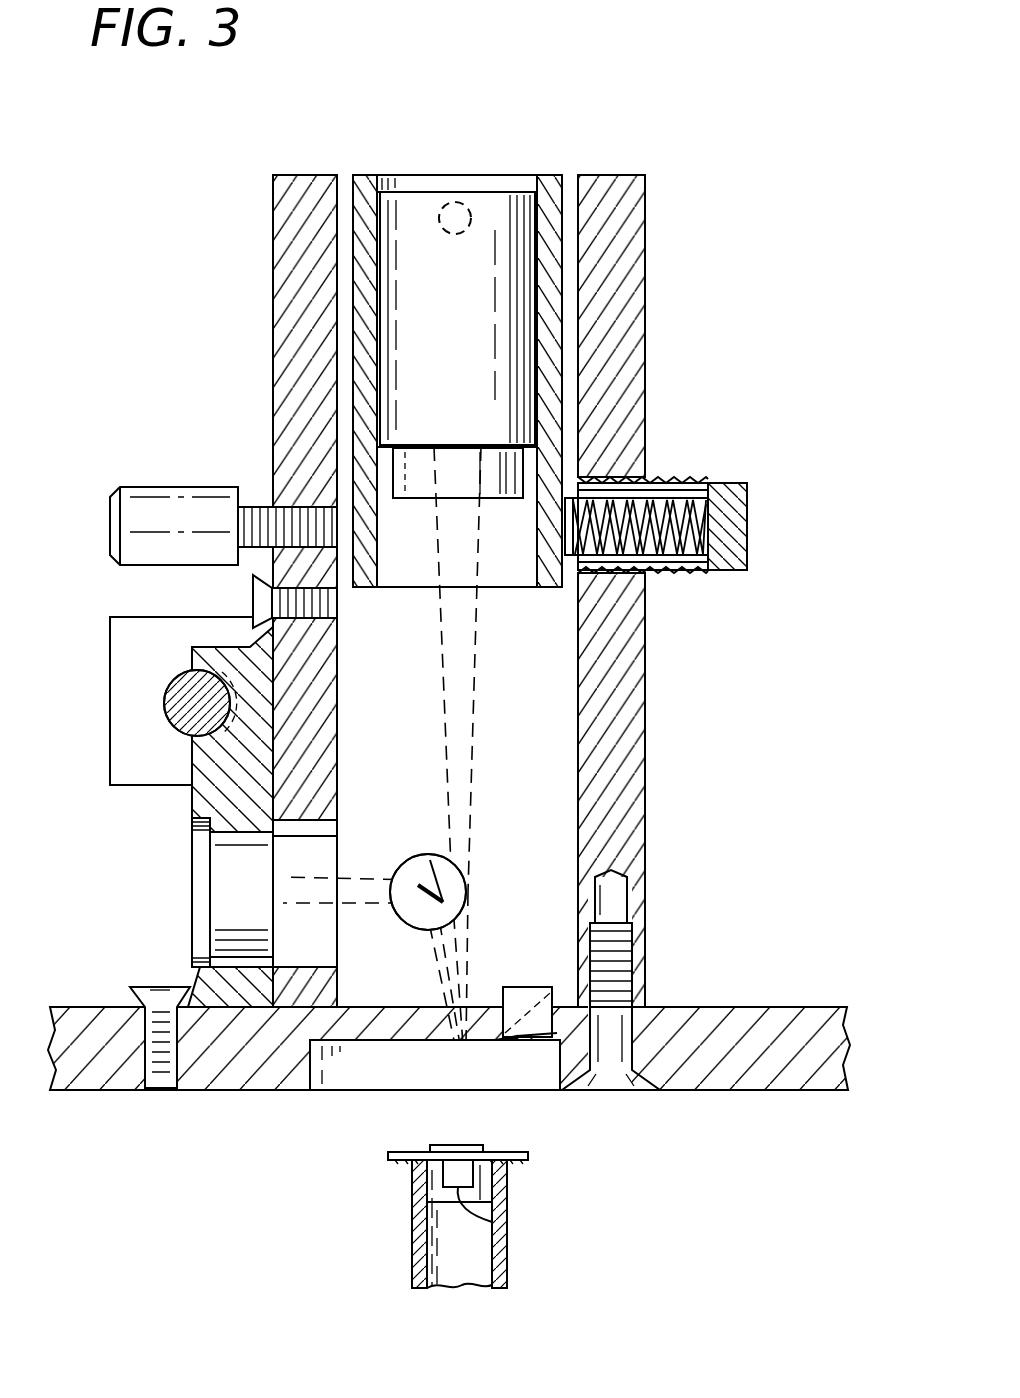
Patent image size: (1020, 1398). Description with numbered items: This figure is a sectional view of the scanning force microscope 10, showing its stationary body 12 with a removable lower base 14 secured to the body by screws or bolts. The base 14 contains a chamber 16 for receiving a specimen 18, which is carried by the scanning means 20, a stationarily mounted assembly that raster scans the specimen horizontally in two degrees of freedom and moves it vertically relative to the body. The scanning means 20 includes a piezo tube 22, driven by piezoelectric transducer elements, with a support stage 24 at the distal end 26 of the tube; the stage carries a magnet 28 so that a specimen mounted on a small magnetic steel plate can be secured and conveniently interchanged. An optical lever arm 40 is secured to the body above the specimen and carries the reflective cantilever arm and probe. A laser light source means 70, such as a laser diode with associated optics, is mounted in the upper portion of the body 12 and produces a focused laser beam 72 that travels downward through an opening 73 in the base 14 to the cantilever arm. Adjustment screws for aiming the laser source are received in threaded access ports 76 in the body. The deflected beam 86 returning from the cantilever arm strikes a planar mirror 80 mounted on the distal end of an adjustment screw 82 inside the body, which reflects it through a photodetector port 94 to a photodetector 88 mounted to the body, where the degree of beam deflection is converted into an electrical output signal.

The scanning force microscope 10 is at (748, 144).
The stationary body 12 is at (646, 655).
The removable lower base 14 is at (711, 1007).
The chamber 16 is at (352, 1085).
The specimen 18 is at (455, 1140).
The scanning means 20 is at (452, 381).
The piezo tube 22 is at (410, 1244).
The support stage 24 is at (398, 1150).
The distal end of piezo tube 26 is at (510, 1152).
The magnet 28 is at (503, 1218).
The optical lever arm 40 is at (470, 1062).
The laser light source means 70 is at (413, 210).
The laser beam 72 is at (475, 686).
The opening 73 is at (441, 1040).
The threaded access ports 76 is at (470, 205).
The planar mirror 80 is at (412, 862).
The adjustment screw 82 is at (462, 866).
The deflected beam 86 is at (435, 964).
The photodetector 88 is at (225, 893).
The photodetector port 94 is at (303, 836).